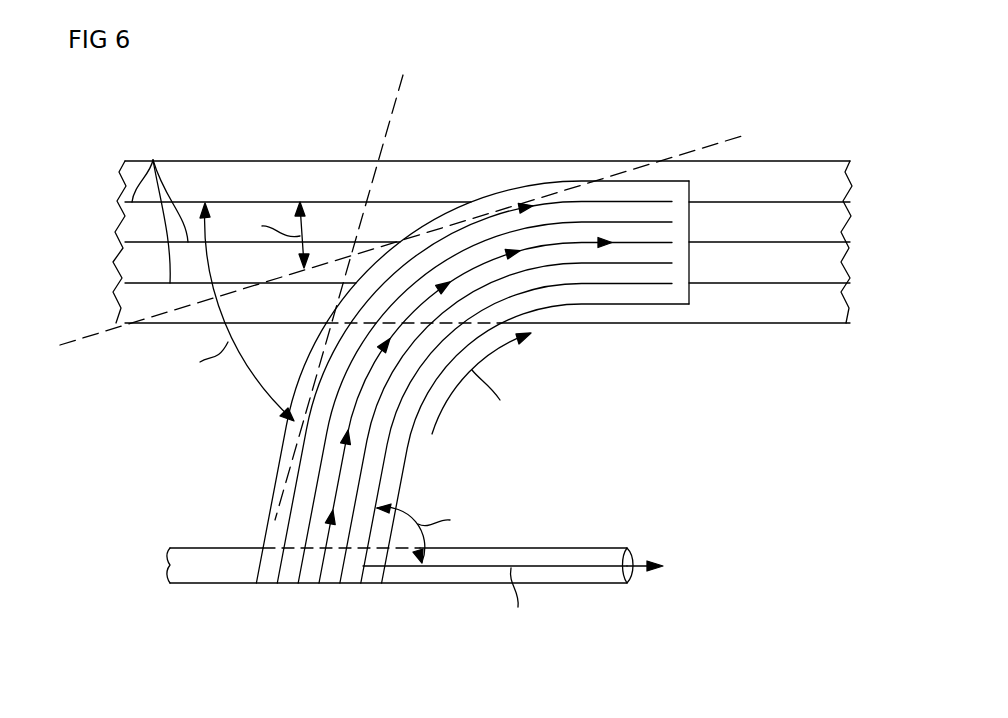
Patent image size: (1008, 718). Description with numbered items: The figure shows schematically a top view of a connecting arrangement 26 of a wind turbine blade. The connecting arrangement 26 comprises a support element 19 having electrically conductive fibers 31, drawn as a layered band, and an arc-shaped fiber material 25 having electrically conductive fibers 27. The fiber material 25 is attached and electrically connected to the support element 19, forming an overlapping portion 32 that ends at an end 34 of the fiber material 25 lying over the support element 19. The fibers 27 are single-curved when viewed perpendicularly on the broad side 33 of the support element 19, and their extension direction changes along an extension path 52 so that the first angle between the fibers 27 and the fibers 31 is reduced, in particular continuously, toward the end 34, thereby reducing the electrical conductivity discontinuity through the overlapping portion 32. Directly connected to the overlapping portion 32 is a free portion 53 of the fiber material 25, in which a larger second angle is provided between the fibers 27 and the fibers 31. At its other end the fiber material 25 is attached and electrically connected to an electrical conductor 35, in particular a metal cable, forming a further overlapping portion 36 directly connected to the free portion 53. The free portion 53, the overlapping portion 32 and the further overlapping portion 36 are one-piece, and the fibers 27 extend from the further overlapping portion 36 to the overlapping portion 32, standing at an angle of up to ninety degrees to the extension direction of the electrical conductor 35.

The support element 19 is at (315, 156).
The connecting arrangement 26 is at (606, 88).
The fibers 31 is at (153, 160).
The broad side 33 is at (440, 172).
The end 34 is at (690, 260).
The overlapping portion 32 is at (633, 295).
The fiber material 25 is at (262, 530).
The fibers 27 is at (297, 452).
The extension path 52 is at (323, 534).
The free portion 53 is at (393, 448).
The electrical conductor 35 is at (196, 557).
The further overlapping portion 36 is at (313, 553).